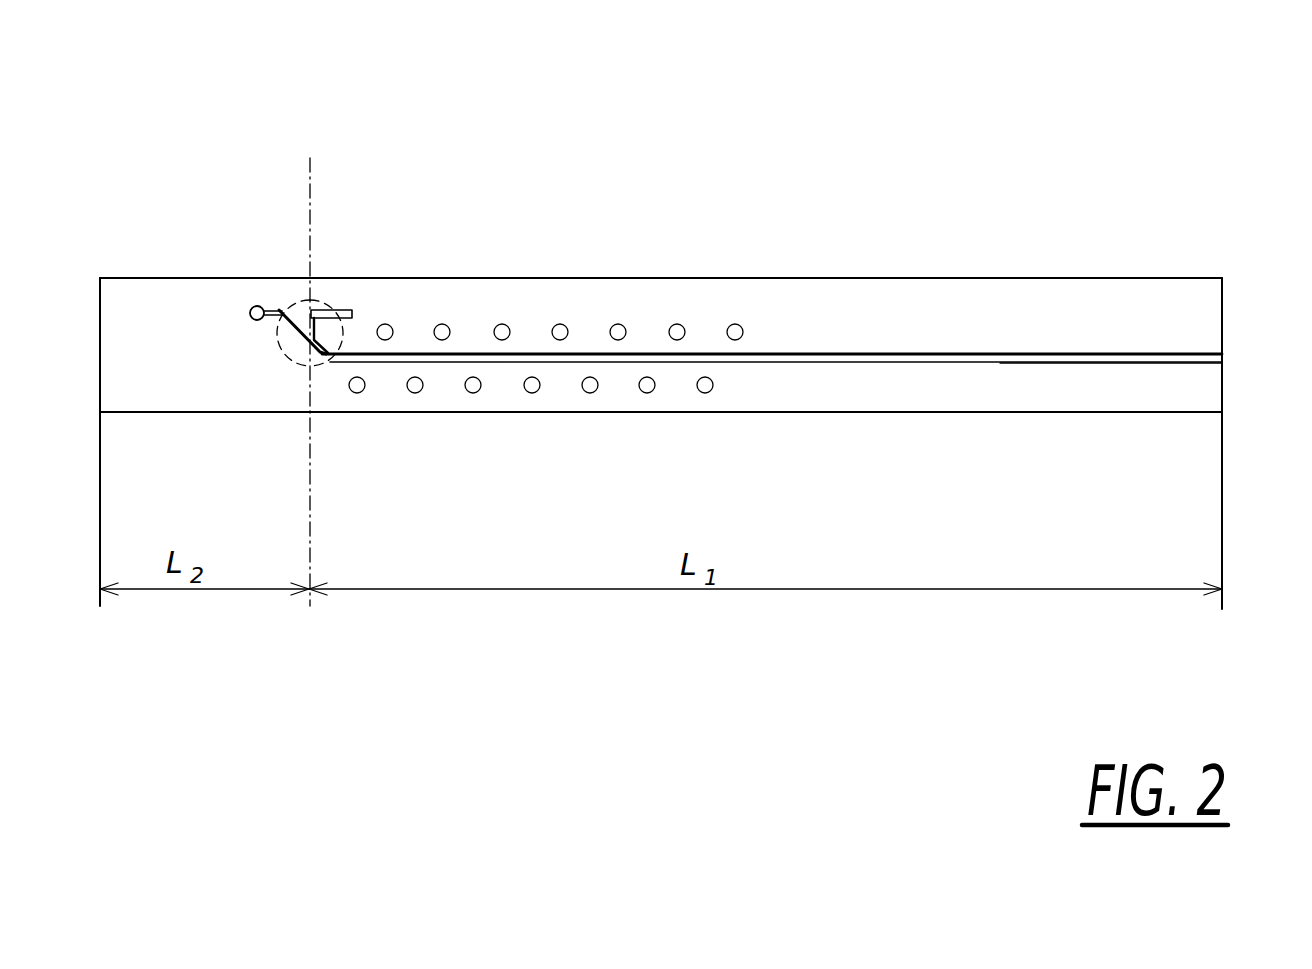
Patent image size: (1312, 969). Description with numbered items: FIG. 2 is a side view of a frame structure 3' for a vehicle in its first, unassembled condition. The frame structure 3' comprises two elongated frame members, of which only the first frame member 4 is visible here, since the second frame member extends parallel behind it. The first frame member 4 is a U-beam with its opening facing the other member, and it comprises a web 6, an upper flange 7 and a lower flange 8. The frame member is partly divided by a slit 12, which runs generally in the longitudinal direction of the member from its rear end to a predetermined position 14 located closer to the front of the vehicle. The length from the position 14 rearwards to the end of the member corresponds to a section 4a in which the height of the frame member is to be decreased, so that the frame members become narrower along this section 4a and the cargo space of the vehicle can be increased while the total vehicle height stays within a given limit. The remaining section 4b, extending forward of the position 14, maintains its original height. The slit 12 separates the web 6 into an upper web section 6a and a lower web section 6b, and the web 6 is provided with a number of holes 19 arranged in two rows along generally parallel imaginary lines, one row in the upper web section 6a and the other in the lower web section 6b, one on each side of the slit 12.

The frame structure 3' is at (661, 222).
The first frame member 4 is at (1055, 280).
The section of the first frame member 4a is at (345, 387).
The remaining section of the first frame member 4b is at (283, 387).
The web 6 is at (1207, 386).
The upper web section 6a is at (797, 305).
The lower web section 6b is at (832, 395).
The upper flange 7 is at (1206, 279).
The lower flange 8 is at (1194, 412).
The slit 12 is at (905, 358).
The predetermined position 14 is at (333, 303).
The holes 19 is at (443, 323).